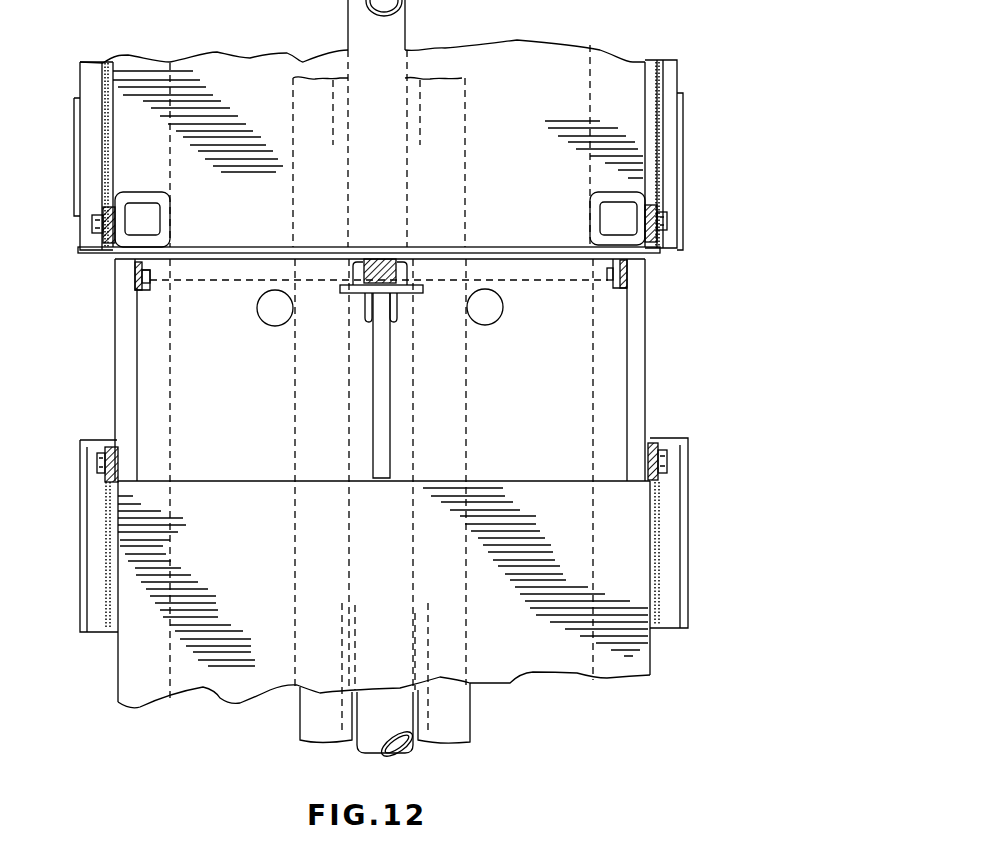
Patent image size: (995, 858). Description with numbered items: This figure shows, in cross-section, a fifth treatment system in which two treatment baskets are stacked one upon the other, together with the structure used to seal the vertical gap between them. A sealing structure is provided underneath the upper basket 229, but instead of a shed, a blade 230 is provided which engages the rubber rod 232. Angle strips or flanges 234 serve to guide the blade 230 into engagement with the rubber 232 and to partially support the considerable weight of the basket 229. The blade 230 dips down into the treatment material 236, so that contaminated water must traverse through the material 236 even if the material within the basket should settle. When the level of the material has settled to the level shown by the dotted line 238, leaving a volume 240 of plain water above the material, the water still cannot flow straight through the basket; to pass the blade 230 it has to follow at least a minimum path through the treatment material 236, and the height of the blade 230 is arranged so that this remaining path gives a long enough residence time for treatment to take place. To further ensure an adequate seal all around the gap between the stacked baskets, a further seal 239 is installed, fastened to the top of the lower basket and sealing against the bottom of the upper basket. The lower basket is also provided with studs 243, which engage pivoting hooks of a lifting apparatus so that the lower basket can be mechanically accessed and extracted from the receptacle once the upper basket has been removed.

The upper basket 229 is at (570, 98).
The blade 230 is at (383, 423).
The rubber rod 232 is at (392, 252).
The angle strips or flanges 234 is at (332, 285).
The treatment material 236 is at (568, 578).
The dotted line 238 is at (568, 280).
The further seal 239 is at (137, 272).
The volume of plain water 240 is at (217, 262).
The studs 243 is at (268, 326).